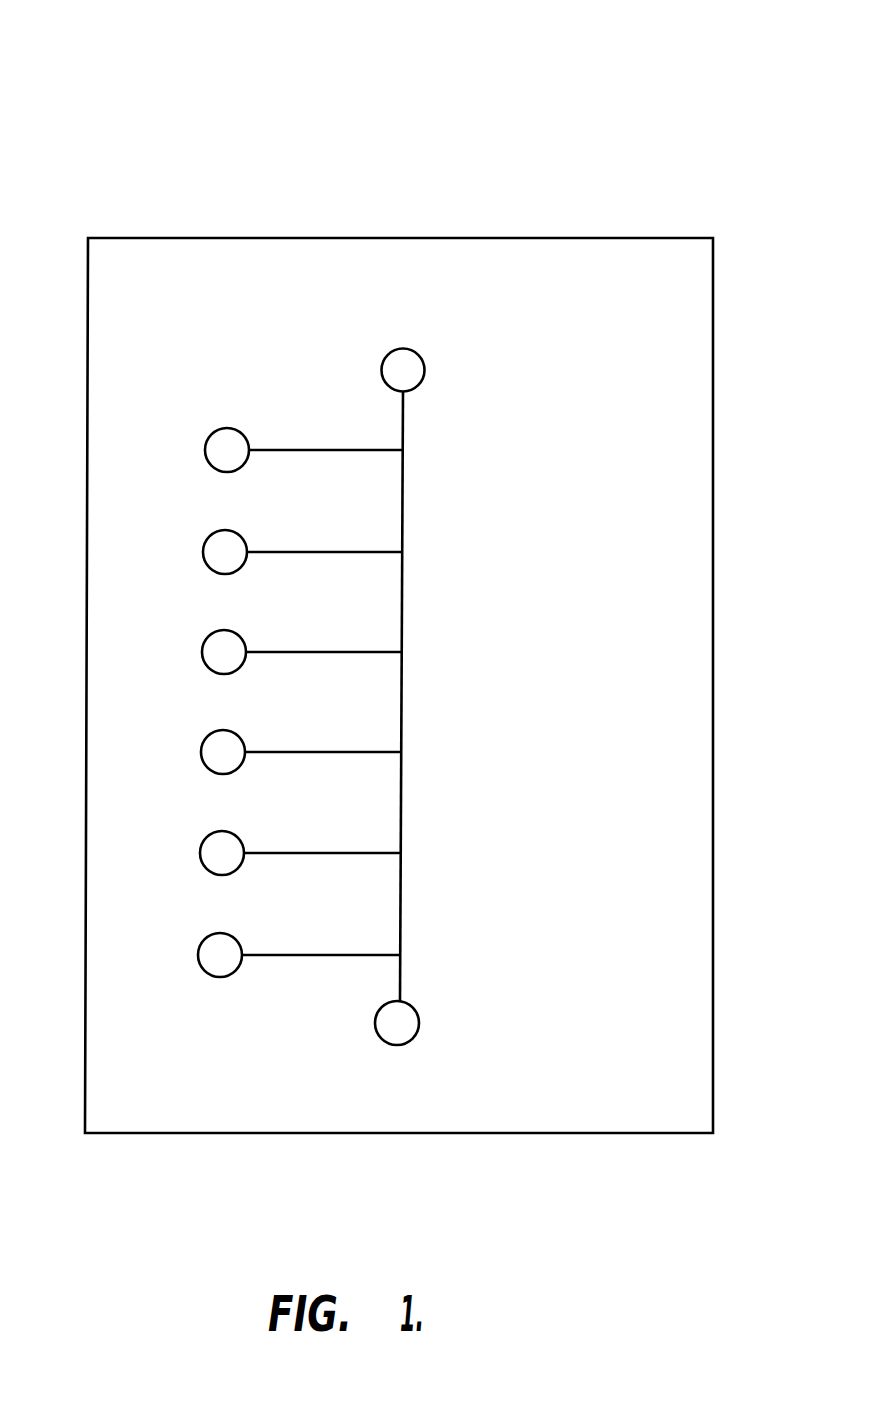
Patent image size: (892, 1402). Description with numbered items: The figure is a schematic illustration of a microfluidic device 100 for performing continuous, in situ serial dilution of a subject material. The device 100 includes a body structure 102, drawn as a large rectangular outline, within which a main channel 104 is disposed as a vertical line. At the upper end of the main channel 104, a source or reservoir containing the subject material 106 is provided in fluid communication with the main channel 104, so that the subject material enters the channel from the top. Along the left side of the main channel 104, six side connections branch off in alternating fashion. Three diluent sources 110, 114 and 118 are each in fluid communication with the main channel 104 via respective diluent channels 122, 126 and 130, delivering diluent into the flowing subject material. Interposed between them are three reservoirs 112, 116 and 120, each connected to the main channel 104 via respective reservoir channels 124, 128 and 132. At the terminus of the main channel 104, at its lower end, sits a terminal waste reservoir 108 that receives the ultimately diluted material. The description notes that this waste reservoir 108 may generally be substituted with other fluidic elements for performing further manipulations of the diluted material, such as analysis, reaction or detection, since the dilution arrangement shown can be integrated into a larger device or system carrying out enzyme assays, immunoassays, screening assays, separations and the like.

The microfluidic device 100 is at (112, 66).
The body structure 102 is at (620, 238).
The main channel 104 is at (404, 501).
The source of subject material 106 is at (424, 373).
The terminal waste reservoir 108 is at (419, 1019).
The diluent source 110 is at (205, 450).
The reservoir 112 is at (203, 552).
The diluent source 114 is at (202, 652).
The reservoir 116 is at (201, 752).
The diluent source 118 is at (200, 853).
The reservoir 120 is at (198, 955).
The diluent channel 122 is at (299, 449).
The reservoir channel 124 is at (305, 551).
The diluent channel 126 is at (297, 651).
The reservoir channel 128 is at (297, 751).
The diluent channel 130 is at (299, 852).
The reservoir channel 132 is at (298, 953).